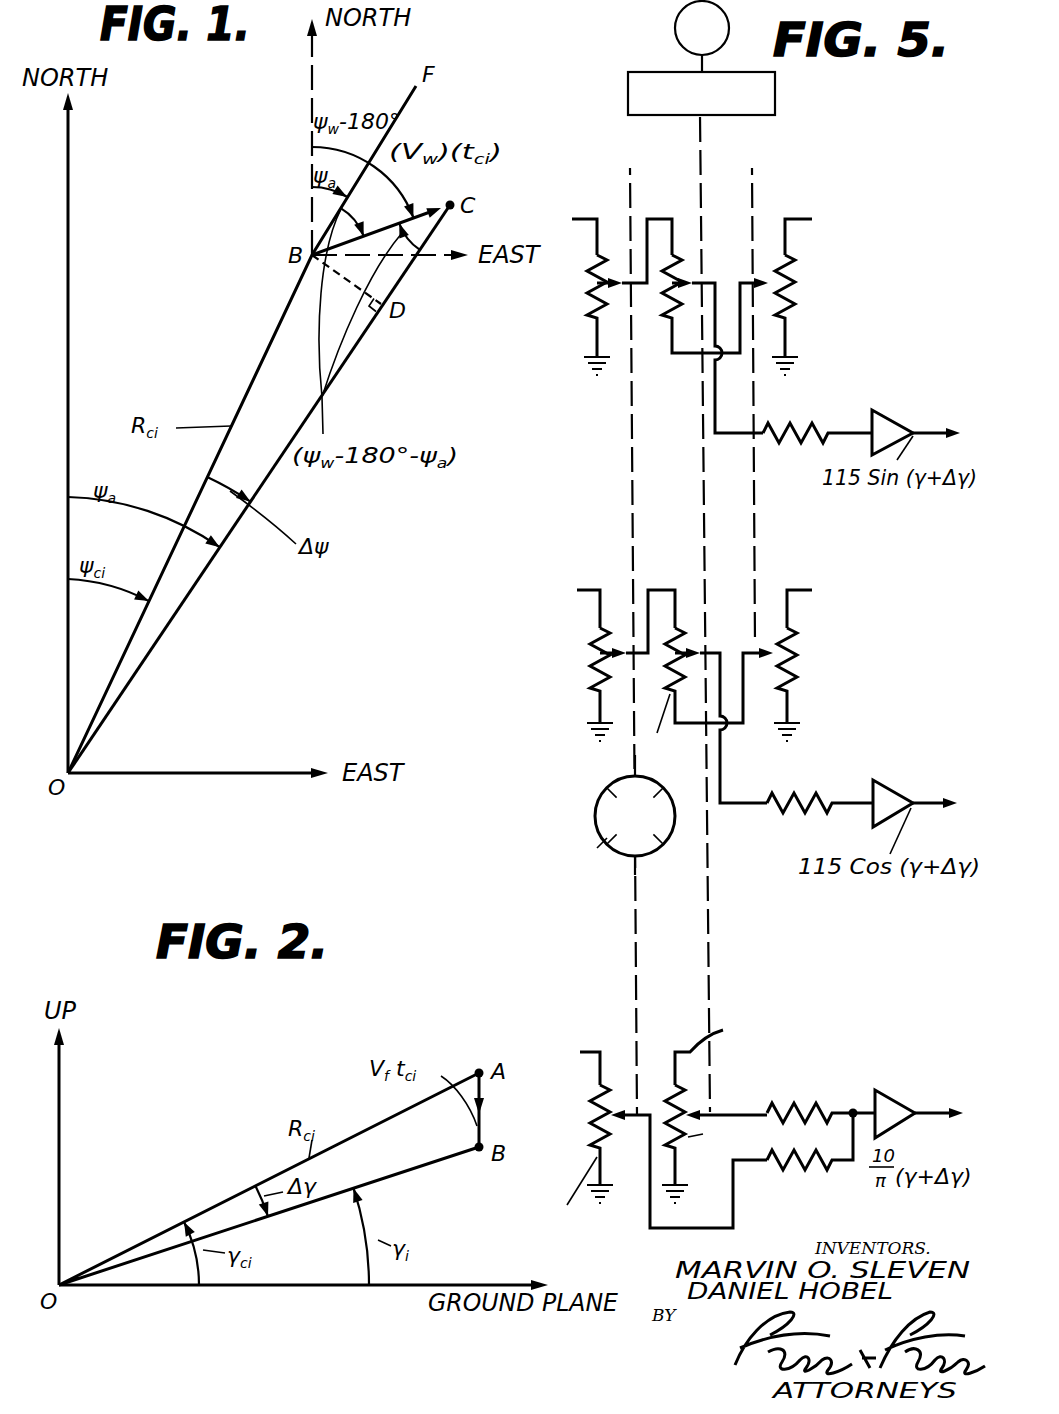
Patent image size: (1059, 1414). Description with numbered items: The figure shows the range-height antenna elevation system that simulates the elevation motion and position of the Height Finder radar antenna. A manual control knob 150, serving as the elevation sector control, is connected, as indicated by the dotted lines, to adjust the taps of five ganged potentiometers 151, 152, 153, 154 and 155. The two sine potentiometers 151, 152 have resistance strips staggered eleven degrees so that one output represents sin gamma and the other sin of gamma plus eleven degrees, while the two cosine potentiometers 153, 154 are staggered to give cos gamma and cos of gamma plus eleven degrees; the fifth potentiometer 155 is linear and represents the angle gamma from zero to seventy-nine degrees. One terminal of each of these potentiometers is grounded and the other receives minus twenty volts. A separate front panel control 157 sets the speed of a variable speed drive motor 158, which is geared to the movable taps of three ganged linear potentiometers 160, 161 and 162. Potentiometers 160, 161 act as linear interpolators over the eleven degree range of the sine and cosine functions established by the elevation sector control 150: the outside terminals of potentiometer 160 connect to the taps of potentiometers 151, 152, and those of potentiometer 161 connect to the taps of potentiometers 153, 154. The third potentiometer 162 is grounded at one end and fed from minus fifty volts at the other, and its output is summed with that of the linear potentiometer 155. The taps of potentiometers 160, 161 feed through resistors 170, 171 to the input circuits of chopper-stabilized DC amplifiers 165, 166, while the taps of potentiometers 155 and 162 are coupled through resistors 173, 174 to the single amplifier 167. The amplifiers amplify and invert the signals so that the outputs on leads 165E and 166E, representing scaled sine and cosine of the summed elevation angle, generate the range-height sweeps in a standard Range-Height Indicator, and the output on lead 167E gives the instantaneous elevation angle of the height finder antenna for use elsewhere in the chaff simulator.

The manual control knob 150 is at (600, 803).
The sine potentiometer 151 is at (598, 286).
The sine potentiometer 152 is at (797, 297).
The cosine potentiometer 153 is at (597, 638).
The cosine potentiometer 154 is at (793, 654).
The linear potentiometer 155 is at (597, 1105).
The front panel control 157 is at (675, 42).
The variable speed drive motor 158 is at (775, 100).
The linear potentiometer 160 is at (672, 332).
The linear potentiometer 161 is at (683, 618).
The linear potentiometer 162 is at (672, 1105).
The chopper-stabilized DC amplifier 165 is at (899, 418).
The output lead 165E is at (940, 415).
The chopper-stabilized DC amplifier 166 is at (887, 784).
The output lead 166E is at (933, 808).
The chopper-stabilized DC amplifier 167 is at (900, 1098).
The output lead 167E is at (923, 1117).
The resistor 170 is at (815, 440).
The resistor 171 is at (815, 812).
The resistor 173 is at (785, 1105).
The resistor 174 is at (790, 1168).